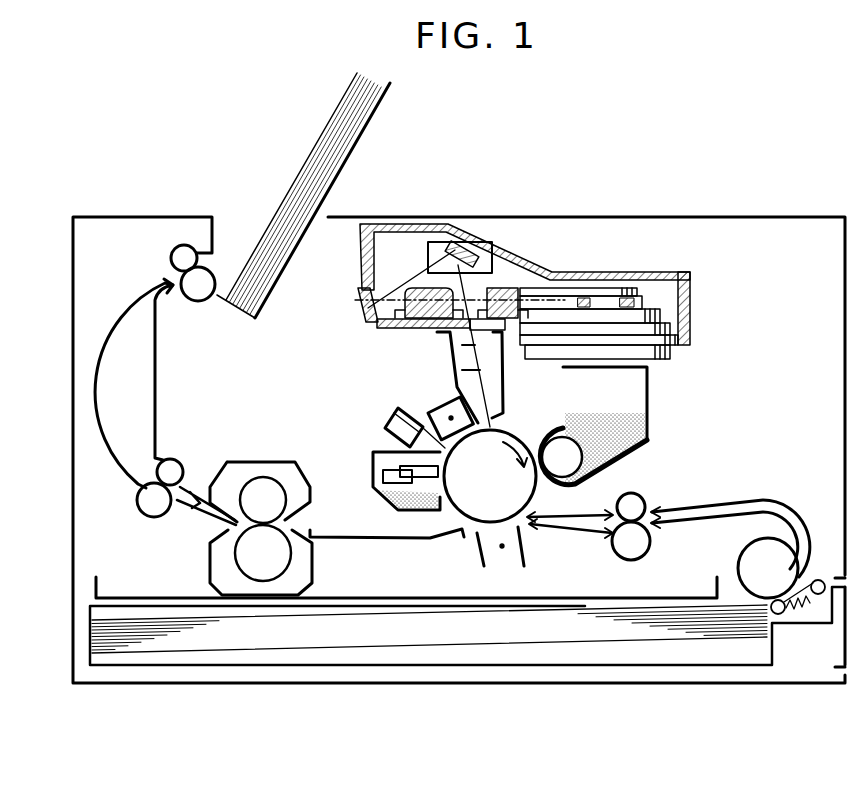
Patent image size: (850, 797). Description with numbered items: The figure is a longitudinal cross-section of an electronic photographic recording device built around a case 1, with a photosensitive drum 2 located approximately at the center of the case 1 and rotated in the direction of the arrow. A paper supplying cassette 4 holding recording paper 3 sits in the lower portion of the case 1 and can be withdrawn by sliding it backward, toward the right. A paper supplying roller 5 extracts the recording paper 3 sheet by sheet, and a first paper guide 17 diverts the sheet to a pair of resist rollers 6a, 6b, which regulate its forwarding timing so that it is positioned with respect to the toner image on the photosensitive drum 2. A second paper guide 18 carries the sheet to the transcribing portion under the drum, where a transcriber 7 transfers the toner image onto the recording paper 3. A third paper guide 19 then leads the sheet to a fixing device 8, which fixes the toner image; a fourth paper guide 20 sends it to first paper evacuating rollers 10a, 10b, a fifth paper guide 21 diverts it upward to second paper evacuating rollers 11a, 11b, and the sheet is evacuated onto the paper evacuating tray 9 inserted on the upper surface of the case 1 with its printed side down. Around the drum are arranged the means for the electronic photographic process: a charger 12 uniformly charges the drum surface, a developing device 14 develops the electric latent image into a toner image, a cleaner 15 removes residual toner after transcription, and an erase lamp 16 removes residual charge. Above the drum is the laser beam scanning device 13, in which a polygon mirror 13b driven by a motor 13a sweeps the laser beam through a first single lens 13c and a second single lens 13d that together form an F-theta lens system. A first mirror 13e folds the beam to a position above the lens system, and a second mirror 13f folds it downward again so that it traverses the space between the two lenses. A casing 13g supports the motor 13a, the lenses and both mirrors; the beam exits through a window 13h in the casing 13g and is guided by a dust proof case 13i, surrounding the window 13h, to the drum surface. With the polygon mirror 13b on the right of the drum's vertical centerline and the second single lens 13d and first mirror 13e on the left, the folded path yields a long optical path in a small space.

The case 1 is at (816, 216).
The photosensitive drum 2 is at (518, 438).
The recording paper 3 is at (597, 620).
The paper supplying cassette 4 is at (610, 683).
The paper supplying roller 5 is at (745, 555).
The resist roller 6a is at (638, 495).
The resist roller 6b is at (647, 553).
The transcriber 7 is at (525, 563).
The fixing device 8 is at (270, 462).
The paper evacuating tray 9 is at (386, 95).
The first paper evacuating roller 10a is at (178, 460).
The first paper evacuating roller 10b is at (139, 513).
The second paper evacuating roller 11a is at (200, 302).
The second paper evacuating roller 11b is at (172, 256).
The charger 12 is at (442, 404).
The laser beam scanning device 13 is at (596, 272).
The motor 13a is at (672, 350).
The polygon mirror 13b is at (612, 293).
The first single lens 13c is at (505, 288).
The second single lens 13d is at (416, 288).
The first mirror 13e is at (358, 318).
The second mirror 13f is at (470, 246).
The casing 13g is at (691, 297).
The window 13h is at (440, 334).
The dust proof case 13i is at (499, 372).
The developing device 14 is at (648, 424).
The cleaner 15 is at (376, 505).
The erase lamp 16 is at (388, 415).
The first paper guide 17 is at (770, 500).
The second paper guide 18 is at (581, 515).
The third paper guide 19 is at (403, 540).
The fourth paper guide 20 is at (185, 524).
The fifth paper guide 21 is at (118, 312).